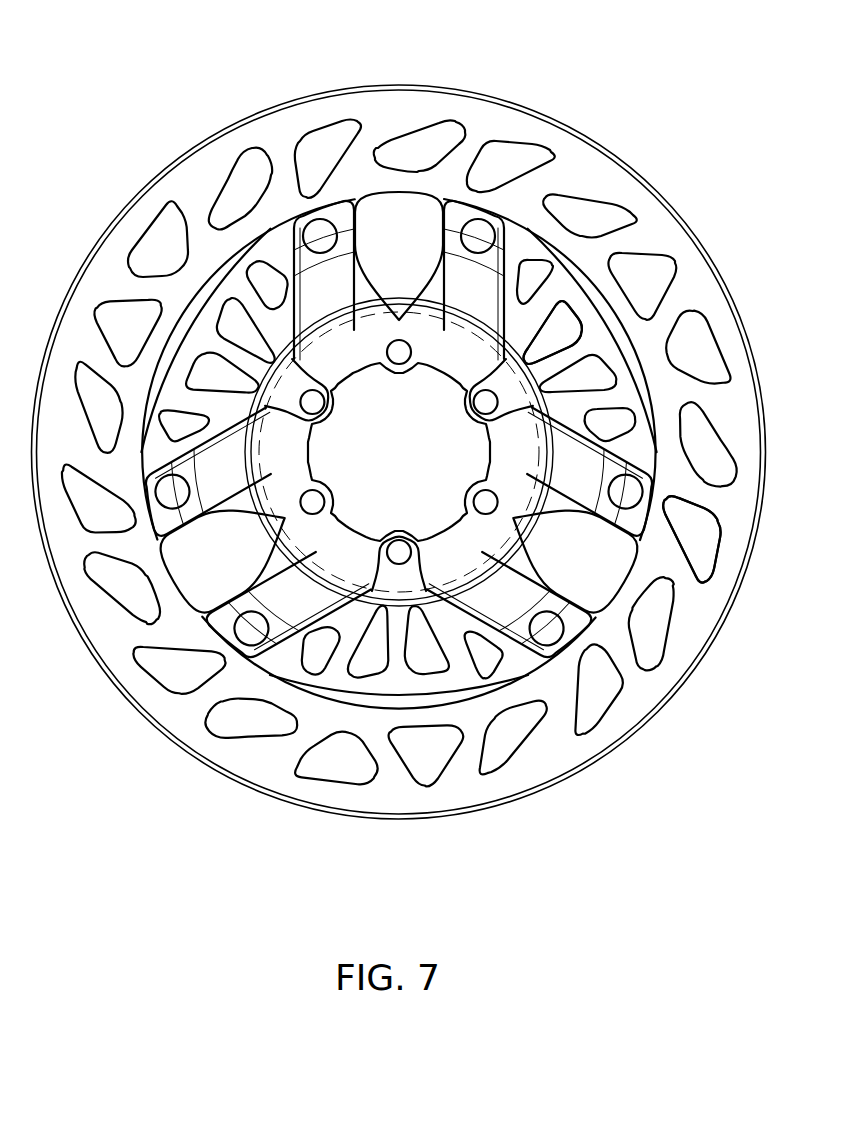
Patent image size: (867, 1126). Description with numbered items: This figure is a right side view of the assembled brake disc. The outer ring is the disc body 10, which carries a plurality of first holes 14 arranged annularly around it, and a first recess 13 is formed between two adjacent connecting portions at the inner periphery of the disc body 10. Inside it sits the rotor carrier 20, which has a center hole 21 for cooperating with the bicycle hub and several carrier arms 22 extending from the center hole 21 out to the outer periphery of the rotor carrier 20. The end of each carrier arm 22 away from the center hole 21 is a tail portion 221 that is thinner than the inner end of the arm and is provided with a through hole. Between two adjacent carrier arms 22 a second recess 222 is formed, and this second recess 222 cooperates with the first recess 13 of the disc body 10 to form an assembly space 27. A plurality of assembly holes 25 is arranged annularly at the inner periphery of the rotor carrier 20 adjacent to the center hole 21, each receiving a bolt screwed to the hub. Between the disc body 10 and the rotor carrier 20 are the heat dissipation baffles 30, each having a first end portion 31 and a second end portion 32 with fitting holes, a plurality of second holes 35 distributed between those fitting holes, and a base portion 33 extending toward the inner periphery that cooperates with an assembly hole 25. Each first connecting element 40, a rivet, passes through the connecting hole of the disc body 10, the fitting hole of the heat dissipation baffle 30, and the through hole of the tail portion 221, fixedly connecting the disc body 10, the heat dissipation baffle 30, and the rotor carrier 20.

The disc body 10 is at (258, 108).
The first recess 13 is at (395, 703).
The first holes 14 is at (578, 205).
The rotor carrier 20 is at (367, 388).
The center hole 21 is at (378, 507).
The carrier arm 22 is at (339, 184).
The tail portion 221 is at (340, 216).
The second recess 222 is at (453, 607).
The assembly holes 25 is at (300, 400).
The assembly space 27 is at (399, 575).
The heat dissipation baffle 30 is at (411, 447).
The first end portion 31 is at (483, 210).
The second end portion 32 is at (652, 500).
The base portion 33 is at (647, 285).
The second holes 35 is at (567, 312).
The first connecting element 40 is at (310, 230).